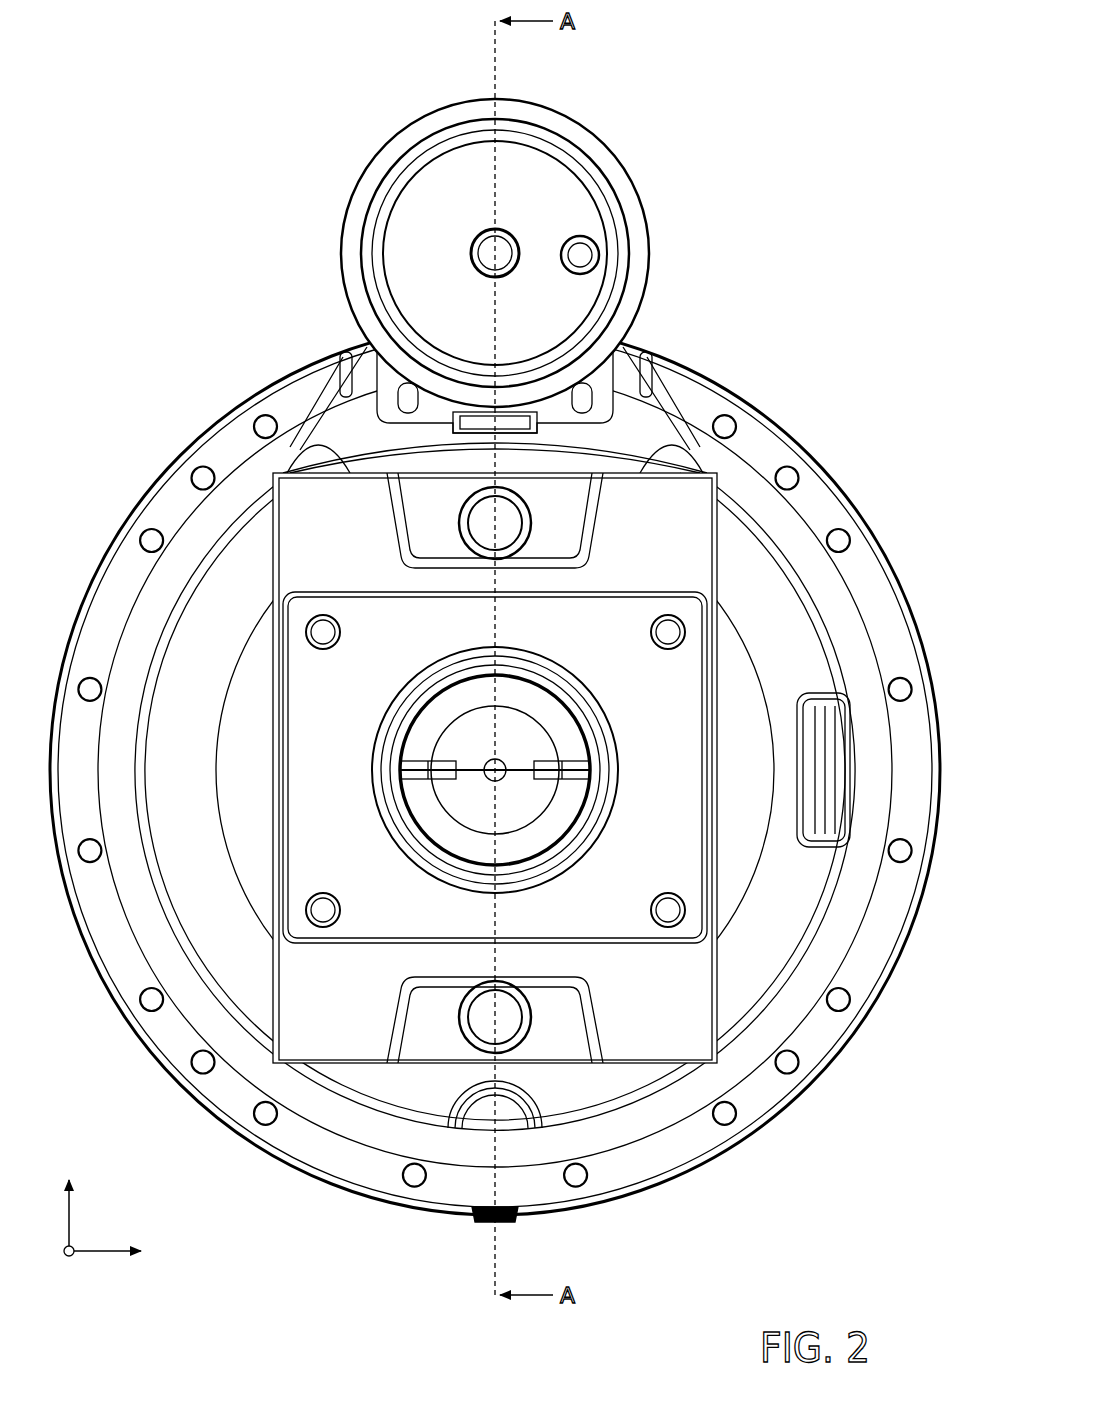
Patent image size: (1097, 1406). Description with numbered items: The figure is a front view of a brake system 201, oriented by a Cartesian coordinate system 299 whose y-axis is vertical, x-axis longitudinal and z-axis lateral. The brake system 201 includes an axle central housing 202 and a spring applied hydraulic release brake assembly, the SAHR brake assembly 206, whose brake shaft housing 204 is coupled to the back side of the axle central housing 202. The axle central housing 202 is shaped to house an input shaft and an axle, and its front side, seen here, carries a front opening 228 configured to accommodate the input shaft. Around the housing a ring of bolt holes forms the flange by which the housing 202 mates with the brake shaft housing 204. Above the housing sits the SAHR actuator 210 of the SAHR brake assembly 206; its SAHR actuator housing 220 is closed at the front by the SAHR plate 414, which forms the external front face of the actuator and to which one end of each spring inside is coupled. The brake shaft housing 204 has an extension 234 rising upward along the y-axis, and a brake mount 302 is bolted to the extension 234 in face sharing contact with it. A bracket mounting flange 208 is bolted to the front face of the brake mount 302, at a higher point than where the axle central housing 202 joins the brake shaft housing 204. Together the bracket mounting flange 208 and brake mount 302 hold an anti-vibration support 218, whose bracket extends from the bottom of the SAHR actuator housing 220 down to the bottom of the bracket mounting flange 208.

The brake system 201 is at (505, 651).
The axle central housing 202 is at (655, 845).
The brake shaft housing 204 is at (735, 965).
The SAHR brake assembly 206 is at (511, 218).
The bracket mounting flange 208 is at (390, 388).
The SAHR actuator 210 is at (676, 246).
The anti-vibration support 218 is at (460, 415).
The SAHR actuator housing 220 is at (345, 212).
The front opening 228 is at (420, 815).
The extension 234 is at (680, 465).
The Cartesian coordinate system 299 is at (122, 1160).
The brake mount 302 is at (632, 415).
The SAHR plate 414 is at (452, 316).